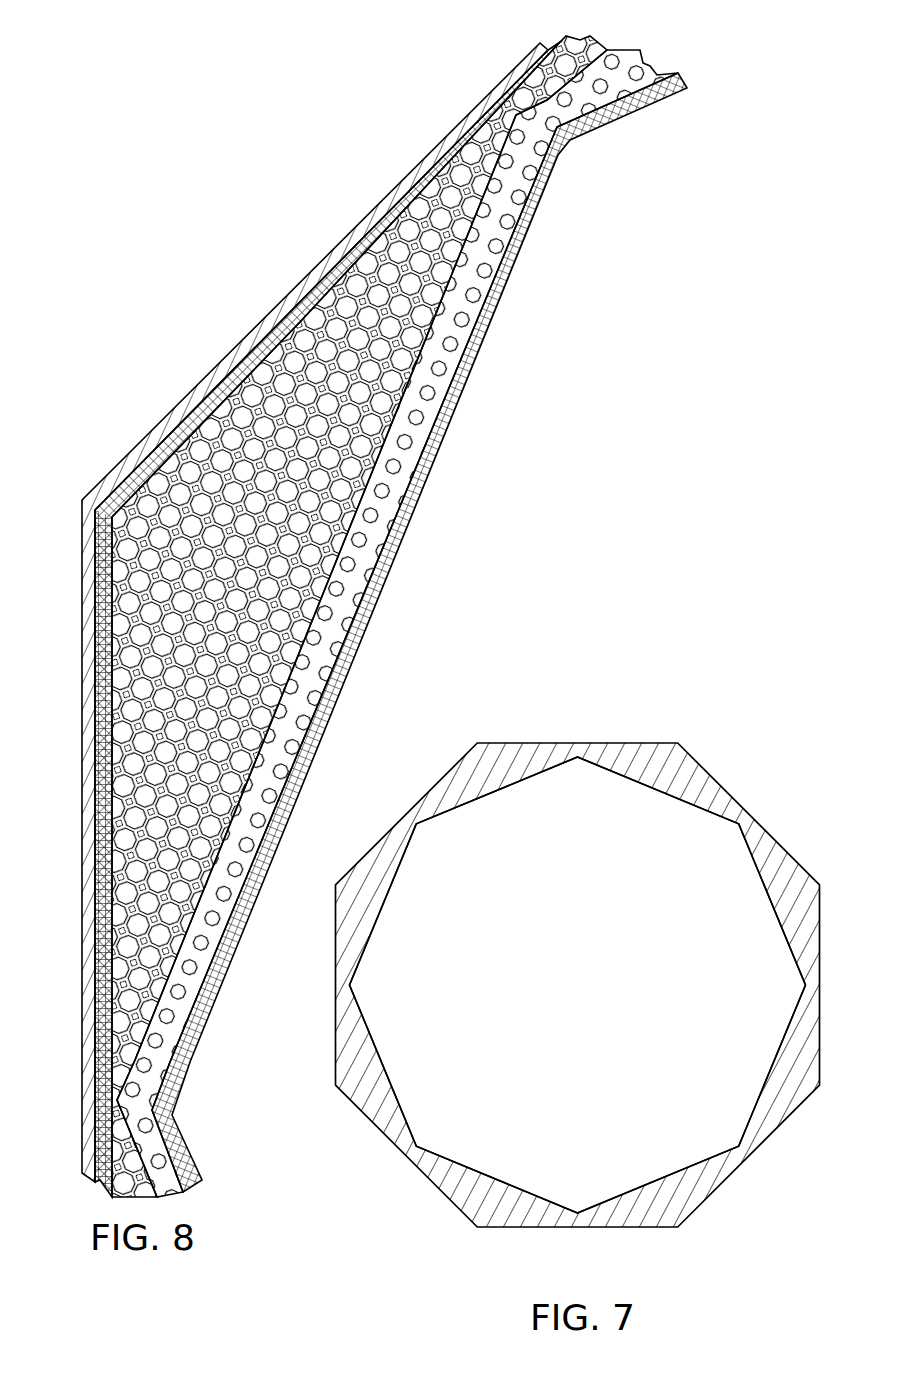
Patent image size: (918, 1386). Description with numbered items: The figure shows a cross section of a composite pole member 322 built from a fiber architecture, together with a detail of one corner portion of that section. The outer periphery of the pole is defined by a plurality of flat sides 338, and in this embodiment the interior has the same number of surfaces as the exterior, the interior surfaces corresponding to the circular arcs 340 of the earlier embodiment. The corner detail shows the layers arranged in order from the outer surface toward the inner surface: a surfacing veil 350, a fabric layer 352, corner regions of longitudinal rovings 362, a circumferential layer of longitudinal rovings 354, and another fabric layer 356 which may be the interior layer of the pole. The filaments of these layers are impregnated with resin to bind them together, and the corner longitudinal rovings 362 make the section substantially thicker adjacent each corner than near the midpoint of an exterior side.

In FIG. 8, the pole member 322 is at (370, 616).
In FIG. 7, the pole member 322 is at (578, 984).
In FIG. 8, the flat side 338 is at (370, 616).
In FIG. 7, the flat side 338 is at (612, 744).
In FIG. 8, the circular arc 340 is at (627, 116).
In FIG. 7, the circular arc 340 is at (497, 793).
In FIG. 8, the surfacing veil 350 is at (86, 718).
In FIG. 8, the fabric layer 352 is at (100, 842).
In FIG. 8, the circumferential layer of longitudinal rovings 354 is at (453, 323).
In FIG. 8, the fabric layer 356 is at (435, 632).
In FIG. 8, the corner regions of longitudinal rovings 362 is at (140, 592).